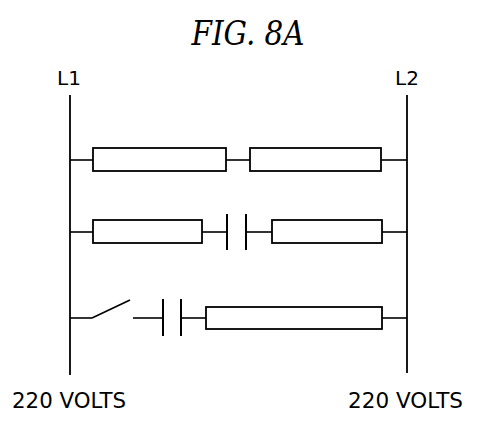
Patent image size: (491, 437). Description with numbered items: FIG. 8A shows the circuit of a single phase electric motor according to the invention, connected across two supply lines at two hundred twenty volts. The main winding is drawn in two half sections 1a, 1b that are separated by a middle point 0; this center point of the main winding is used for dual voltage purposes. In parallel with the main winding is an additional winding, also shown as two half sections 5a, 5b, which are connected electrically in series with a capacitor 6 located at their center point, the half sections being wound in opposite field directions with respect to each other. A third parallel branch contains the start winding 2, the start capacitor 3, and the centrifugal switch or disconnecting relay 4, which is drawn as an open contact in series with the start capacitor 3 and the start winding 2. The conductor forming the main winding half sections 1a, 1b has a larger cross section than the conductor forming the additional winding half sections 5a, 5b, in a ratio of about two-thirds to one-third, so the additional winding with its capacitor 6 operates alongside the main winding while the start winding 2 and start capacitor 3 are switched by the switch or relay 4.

The main winding half section 1a is at (159, 147).
The main winding half section 1b is at (315, 147).
The middle point 0 is at (238, 141).
The additional winding half section 5a is at (147, 219).
The additional winding half section 5b is at (327, 219).
The capacitor 6 is at (237, 245).
The centrifugal switch or disconnecting relay 4 is at (100, 321).
The start capacitor 3 is at (172, 331).
The start winding 2 is at (294, 331).